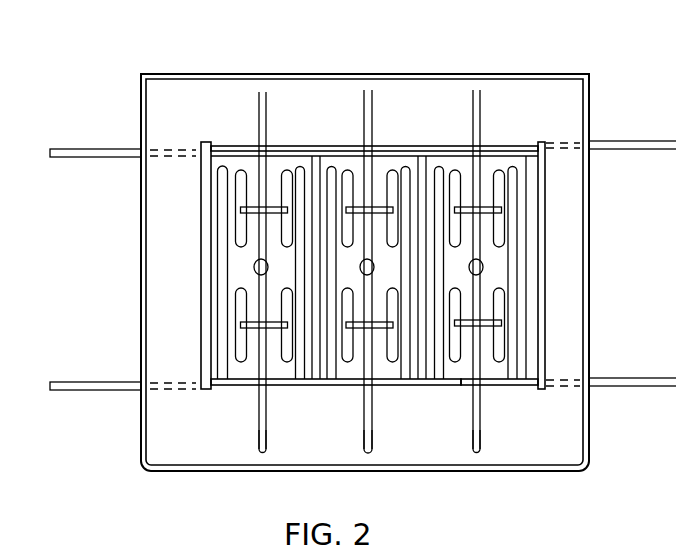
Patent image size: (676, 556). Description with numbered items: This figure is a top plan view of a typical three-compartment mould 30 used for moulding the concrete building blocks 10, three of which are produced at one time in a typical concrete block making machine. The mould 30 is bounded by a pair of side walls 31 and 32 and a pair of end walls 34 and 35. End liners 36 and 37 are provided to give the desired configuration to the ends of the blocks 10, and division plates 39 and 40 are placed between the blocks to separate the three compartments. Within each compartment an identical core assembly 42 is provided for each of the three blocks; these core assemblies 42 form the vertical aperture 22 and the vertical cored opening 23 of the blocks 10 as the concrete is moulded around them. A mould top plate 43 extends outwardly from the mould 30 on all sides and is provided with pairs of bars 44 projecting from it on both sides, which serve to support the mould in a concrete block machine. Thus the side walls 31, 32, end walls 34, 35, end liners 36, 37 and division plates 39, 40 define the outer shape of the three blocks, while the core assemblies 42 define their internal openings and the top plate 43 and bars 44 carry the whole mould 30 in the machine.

The building block 10 is at (290, 270).
The vertical aperture 22 is at (256, 266).
The vertical cored opening 23 is at (344, 160).
The mould 30 is at (522, 208).
The side wall 31 is at (205, 247).
The side wall 32 is at (535, 291).
The end wall 34 is at (393, 152).
The end wall 35 is at (395, 386).
The end liner 36 is at (491, 152).
The end liner 37 is at (490, 383).
The division plate 39 is at (314, 148).
The division plate 40 is at (428, 152).
The core assembly 42 is at (258, 452).
The mould top plate 43 is at (181, 92).
The bars 44 is at (84, 150).